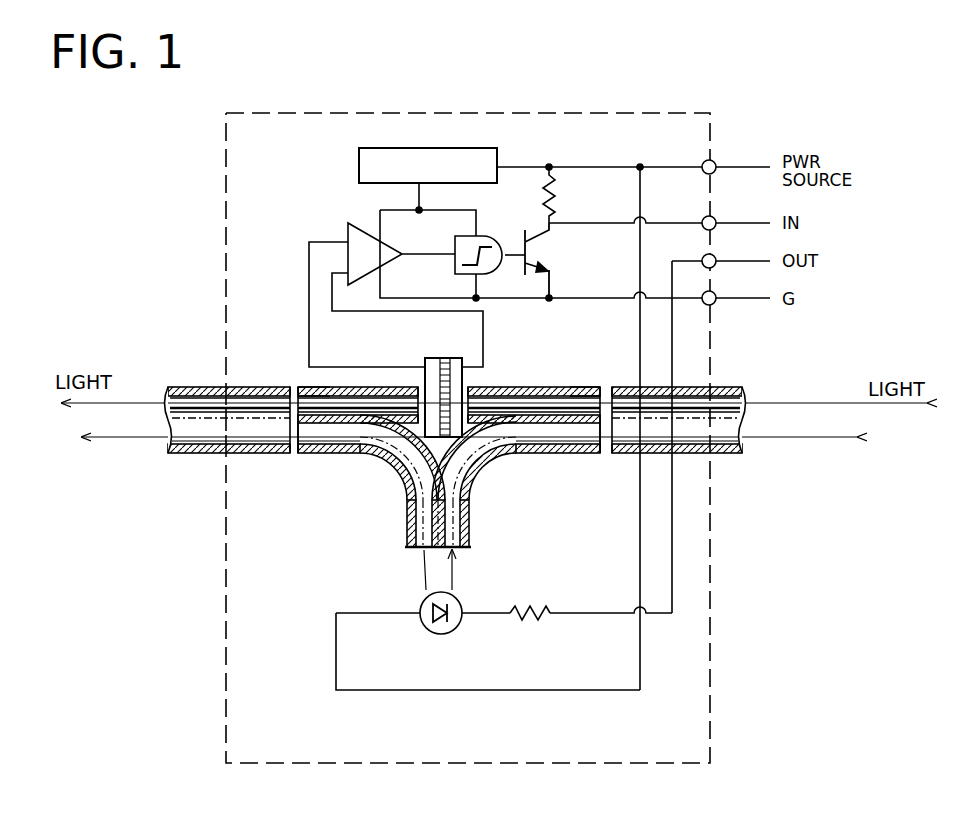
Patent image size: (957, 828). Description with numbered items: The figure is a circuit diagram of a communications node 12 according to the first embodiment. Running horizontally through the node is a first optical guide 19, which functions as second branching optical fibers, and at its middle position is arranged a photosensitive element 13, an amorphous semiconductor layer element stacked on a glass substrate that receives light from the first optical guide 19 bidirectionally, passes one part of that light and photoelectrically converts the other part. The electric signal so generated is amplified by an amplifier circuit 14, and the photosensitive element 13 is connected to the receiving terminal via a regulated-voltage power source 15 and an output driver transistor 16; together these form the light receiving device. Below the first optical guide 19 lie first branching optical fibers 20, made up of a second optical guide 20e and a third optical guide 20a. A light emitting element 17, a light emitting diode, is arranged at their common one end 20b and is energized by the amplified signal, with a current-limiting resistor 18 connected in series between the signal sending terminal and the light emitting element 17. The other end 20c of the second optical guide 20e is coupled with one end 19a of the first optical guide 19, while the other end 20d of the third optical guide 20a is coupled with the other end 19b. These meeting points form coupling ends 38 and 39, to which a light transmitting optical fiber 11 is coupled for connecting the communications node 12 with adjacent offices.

The light transmitting optical fiber 11 is at (200, 387).
The communications node 12 is at (712, 718).
The photosensitive element 13 is at (465, 377).
The amplifier circuit 14 is at (352, 233).
The regulated-voltage power source 15 is at (365, 163).
The output driver transistor 16 is at (546, 251).
The light emitting element 17 is at (445, 634).
The current-limiting resistor 18 is at (525, 602).
The first optical guide 19 is at (302, 387).
The one end of the first optical guide 19a is at (282, 387).
The other end of the first optical guide 19b is at (607, 397).
The first branching optical fibers 20 is at (475, 510).
The third optical guide 20a is at (538, 437).
The one end of the second and third optical guides 20b is at (443, 547).
The other end of the second optical guide 20c is at (298, 437).
The other end of the third optical guide 20d is at (603, 443).
The second optical guide 20e is at (398, 448).
The coupling end 38 is at (297, 418).
The coupling end 39 is at (612, 427).